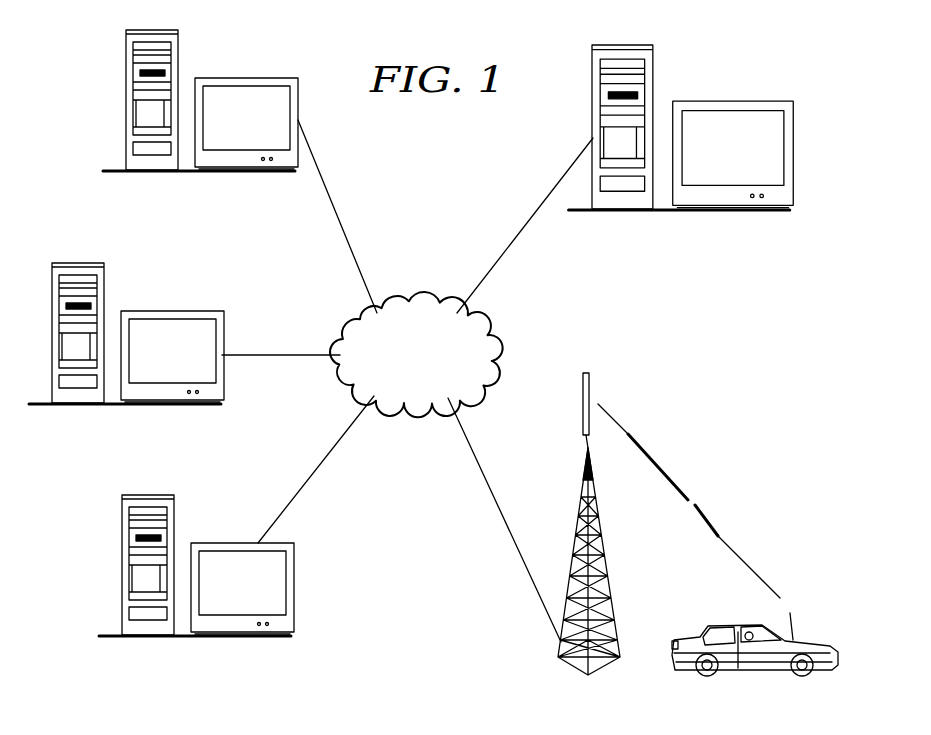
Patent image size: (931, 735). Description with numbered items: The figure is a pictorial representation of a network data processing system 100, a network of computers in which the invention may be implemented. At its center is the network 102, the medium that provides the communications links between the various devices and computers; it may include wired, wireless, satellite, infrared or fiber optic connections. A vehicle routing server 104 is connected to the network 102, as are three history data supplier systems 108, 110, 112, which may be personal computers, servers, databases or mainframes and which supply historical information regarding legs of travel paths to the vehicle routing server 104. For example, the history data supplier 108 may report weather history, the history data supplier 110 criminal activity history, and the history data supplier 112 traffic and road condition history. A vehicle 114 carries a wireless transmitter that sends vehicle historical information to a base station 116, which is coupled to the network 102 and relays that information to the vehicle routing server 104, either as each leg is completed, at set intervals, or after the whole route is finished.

The network data processing system 100 is at (734, 71).
The network 102 is at (437, 383).
The vehicle routing server 104 is at (267, 128).
The history data supplier system 108 is at (149, 364).
The history data supplier system 110 is at (219, 593).
The history data supplier system 112 is at (715, 160).
The vehicle 114 is at (757, 673).
The base station 116 is at (606, 567).